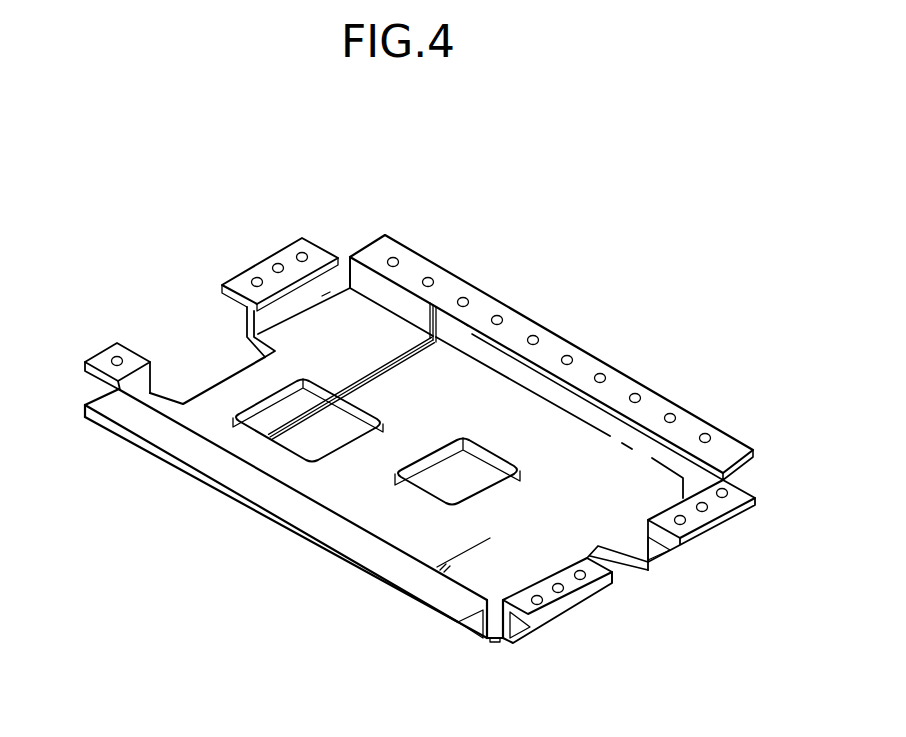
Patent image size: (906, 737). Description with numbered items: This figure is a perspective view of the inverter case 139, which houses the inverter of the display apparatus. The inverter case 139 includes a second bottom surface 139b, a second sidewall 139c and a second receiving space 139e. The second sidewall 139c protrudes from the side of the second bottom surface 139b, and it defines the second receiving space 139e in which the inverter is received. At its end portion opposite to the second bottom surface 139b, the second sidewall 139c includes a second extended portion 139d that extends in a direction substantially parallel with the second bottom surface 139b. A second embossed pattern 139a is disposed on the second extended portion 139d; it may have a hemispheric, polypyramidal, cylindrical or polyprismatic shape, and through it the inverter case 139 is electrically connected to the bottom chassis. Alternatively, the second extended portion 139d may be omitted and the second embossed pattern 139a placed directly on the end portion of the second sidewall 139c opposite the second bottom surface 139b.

The inverter case 139 is at (531, 139).
The second embossed pattern 139a is at (600, 378).
The second bottom surface 139b is at (372, 323).
The second sidewall 139c is at (265, 312).
The second extended portion 139d is at (261, 270).
The second receiving space 139e is at (483, 404).